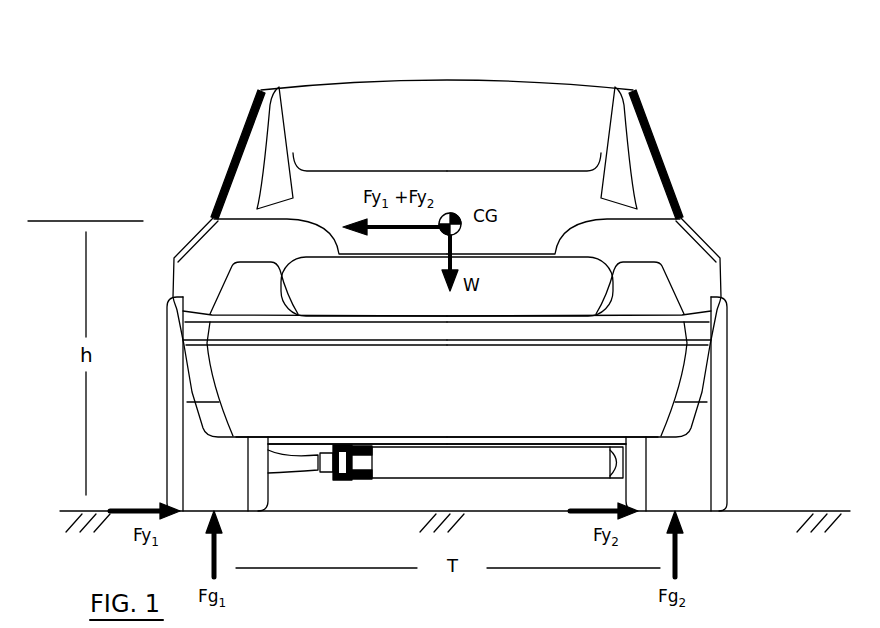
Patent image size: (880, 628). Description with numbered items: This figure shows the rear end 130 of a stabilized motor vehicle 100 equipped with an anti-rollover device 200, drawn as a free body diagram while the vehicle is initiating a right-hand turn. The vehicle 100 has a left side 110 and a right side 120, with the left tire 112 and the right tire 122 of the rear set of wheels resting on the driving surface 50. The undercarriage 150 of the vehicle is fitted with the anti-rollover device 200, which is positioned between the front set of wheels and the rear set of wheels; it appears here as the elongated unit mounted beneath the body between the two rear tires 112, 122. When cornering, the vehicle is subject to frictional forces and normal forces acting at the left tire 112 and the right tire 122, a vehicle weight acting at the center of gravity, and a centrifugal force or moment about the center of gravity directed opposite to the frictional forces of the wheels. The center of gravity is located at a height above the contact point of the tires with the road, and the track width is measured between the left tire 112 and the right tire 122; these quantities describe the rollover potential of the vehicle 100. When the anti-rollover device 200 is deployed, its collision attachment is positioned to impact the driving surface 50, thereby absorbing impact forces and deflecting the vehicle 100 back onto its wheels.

The vehicle 100 is at (397, 98).
The left side 110 is at (222, 183).
The right side 120 is at (668, 168).
The left tire 112 is at (213, 468).
The right tire 122 is at (698, 459).
The rear end 130 is at (447, 405).
The undercarriage 150 is at (566, 436).
The anti-rollover device 200 is at (437, 462).
The driving surface 50 is at (436, 519).